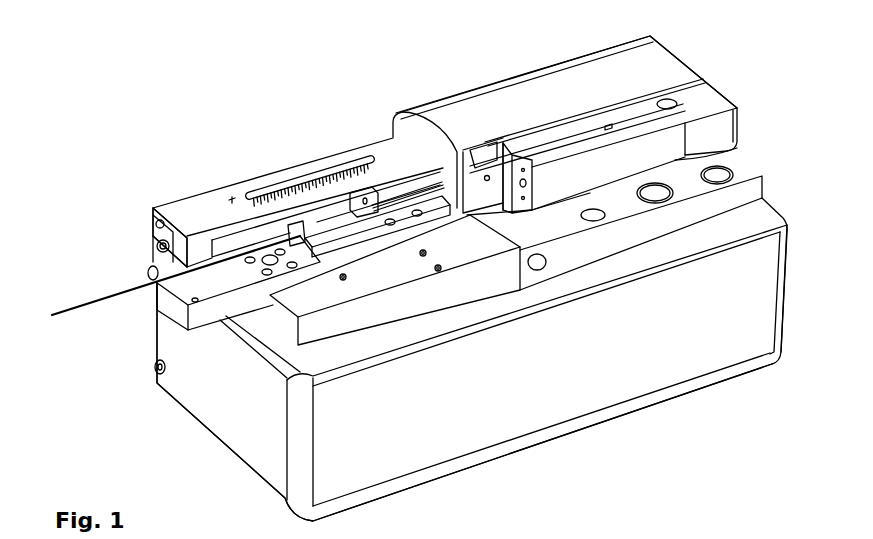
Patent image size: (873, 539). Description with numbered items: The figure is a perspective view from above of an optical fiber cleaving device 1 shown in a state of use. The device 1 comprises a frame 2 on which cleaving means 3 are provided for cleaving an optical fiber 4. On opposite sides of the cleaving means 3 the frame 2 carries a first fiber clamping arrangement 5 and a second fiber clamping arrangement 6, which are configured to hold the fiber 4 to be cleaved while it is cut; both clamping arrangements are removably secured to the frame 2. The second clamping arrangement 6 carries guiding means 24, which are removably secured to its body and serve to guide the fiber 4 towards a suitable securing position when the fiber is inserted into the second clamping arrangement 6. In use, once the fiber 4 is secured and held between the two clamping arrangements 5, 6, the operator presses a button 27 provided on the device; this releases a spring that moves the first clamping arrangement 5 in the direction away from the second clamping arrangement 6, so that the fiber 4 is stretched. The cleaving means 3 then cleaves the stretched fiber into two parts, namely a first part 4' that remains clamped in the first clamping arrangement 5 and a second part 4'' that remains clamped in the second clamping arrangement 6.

The optical fiber cleaving device 1 is at (228, 97).
The frame 2 is at (765, 217).
The cleaving means 3 is at (482, 168).
The optical fiber 4 is at (176, 253).
The first part 4' is at (234, 235).
The second part 4'' is at (512, 114).
The first fiber clamping arrangement 5 is at (410, 187).
The second fiber clamping arrangement 6 is at (710, 127).
The guiding means 24 is at (550, 185).
The button 27 is at (655, 195).